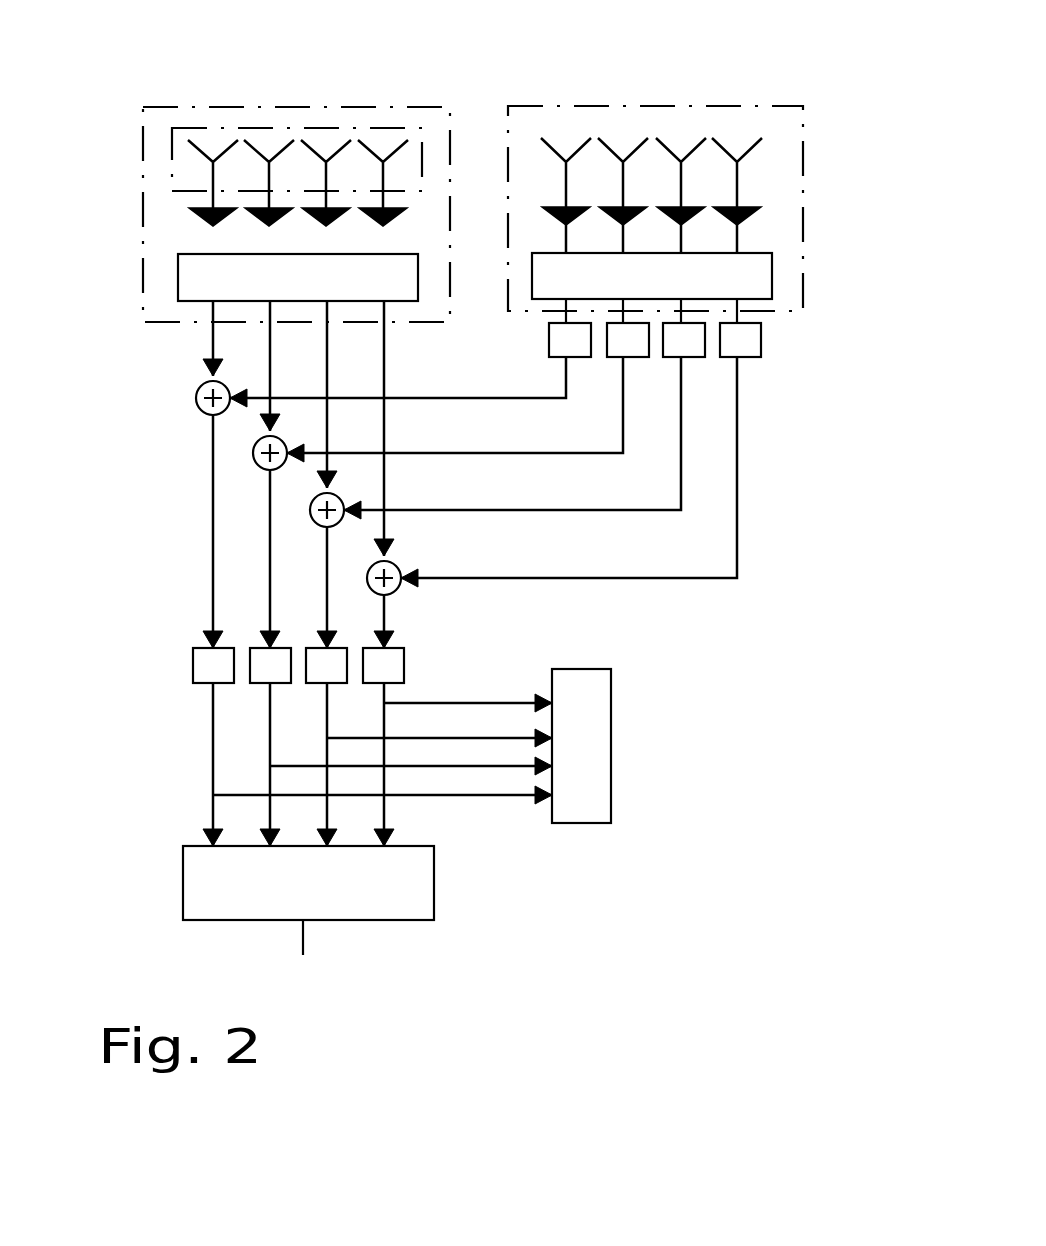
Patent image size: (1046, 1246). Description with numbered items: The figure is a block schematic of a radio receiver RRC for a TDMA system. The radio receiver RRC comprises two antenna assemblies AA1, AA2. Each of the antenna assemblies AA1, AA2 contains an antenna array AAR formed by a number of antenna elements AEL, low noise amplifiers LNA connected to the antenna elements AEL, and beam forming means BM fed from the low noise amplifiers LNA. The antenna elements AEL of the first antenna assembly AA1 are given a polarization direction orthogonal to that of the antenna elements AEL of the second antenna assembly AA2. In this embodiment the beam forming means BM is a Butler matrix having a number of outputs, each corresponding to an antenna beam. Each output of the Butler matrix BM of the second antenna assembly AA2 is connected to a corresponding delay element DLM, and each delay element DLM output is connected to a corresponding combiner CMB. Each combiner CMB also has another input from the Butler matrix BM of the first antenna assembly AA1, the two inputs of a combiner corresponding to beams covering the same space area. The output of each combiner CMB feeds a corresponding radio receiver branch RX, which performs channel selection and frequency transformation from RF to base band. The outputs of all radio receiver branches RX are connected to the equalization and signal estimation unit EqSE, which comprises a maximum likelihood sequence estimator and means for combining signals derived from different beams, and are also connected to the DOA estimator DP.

The antenna element AEL is at (212, 165).
The antenna array AAR is at (172, 173).
The first antenna assembly AA1 is at (143, 210).
The low noise amplifier LNA is at (200, 218).
The radio receiver RRC is at (717, 159).
The second antenna assembly AA2 is at (807, 182).
The beam forming means BM is at (772, 282).
The delay element DLM is at (761, 343).
The combiner CMB is at (196, 398).
The radio receiver branch RX is at (193, 672).
The DOA estimator DP is at (611, 730).
The equalization and signal estimation unit EqSE is at (183, 893).